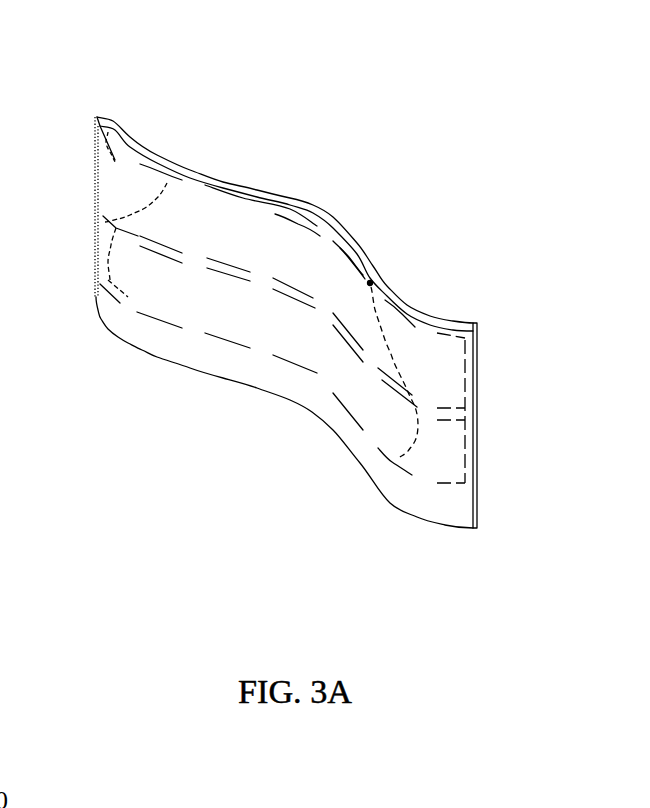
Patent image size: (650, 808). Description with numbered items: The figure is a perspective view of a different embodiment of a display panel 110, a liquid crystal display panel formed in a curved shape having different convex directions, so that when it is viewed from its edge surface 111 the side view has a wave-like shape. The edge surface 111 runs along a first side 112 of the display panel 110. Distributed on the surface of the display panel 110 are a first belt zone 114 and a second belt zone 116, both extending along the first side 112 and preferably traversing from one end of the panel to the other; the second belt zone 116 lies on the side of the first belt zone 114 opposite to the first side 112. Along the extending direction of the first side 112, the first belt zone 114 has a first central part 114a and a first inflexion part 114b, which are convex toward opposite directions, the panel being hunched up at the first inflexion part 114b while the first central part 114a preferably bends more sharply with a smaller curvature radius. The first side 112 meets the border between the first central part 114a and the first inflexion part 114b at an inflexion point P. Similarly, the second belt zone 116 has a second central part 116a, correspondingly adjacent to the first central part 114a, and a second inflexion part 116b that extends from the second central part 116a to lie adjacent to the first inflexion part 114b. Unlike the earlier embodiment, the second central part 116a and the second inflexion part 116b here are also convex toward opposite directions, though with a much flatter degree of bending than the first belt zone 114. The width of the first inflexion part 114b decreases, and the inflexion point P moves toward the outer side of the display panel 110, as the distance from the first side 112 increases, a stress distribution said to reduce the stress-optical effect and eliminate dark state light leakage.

The display panel 110 is at (97, 27).
The edge surface 111 is at (132, 140).
The first side 112 is at (167, 156).
The first belt zone 114 is at (258, 189).
The first central part 114a is at (287, 235).
The first inflexion part 114b is at (113, 118).
The second belt zone 116 is at (241, 348).
The second central part 116a is at (325, 355).
The second inflexion part 116b is at (108, 275).
The inflexion point P is at (393, 355).